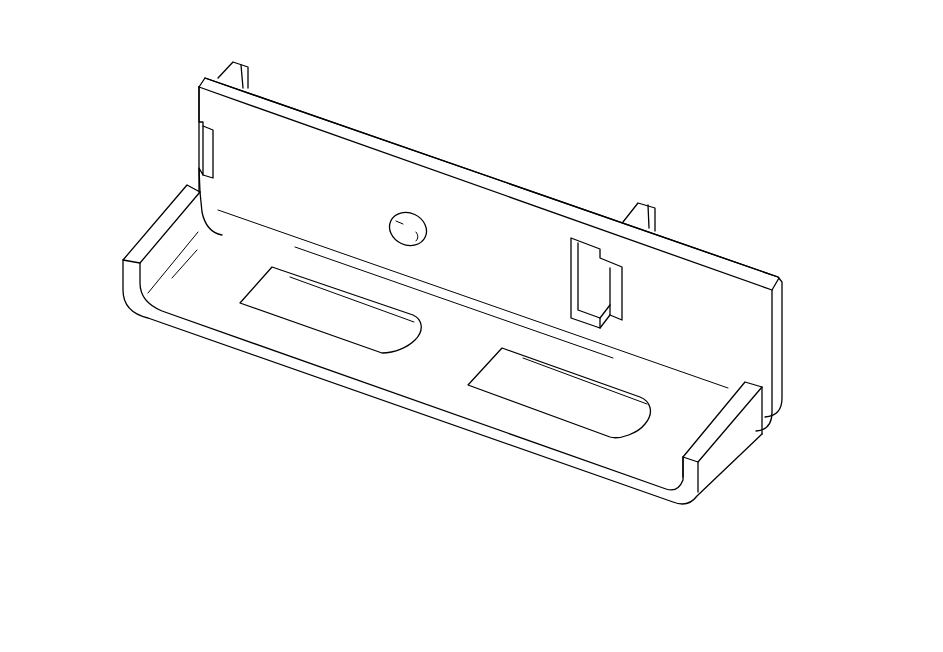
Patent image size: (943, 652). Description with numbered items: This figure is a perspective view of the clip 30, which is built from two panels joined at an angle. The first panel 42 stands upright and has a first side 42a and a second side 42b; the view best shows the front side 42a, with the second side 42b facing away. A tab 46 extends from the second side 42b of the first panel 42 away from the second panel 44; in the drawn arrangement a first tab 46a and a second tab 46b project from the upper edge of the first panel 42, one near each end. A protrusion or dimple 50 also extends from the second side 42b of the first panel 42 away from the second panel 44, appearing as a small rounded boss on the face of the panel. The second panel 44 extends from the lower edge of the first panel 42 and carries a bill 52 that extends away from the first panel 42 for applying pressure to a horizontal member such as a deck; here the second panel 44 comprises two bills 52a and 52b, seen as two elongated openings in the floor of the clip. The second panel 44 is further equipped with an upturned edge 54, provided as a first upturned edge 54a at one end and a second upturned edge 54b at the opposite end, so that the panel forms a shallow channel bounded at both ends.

The clip 30 is at (189, 71).
The first panel 42 is at (477, 207).
The first side 42a is at (283, 187).
The second side 42b is at (433, 141).
The second panel 44 is at (323, 357).
The tab 46 is at (711, 229).
The first tab 46a is at (649, 202).
The second tab 46b is at (247, 63).
The dimple 50 is at (392, 217).
The bill 52 is at (218, 276).
The first bill 52a is at (382, 328).
The second bill 52b is at (595, 402).
The upturned edge 54 is at (797, 467).
The first upturned edge 54a is at (718, 423).
The second upturned edge 54b is at (160, 232).